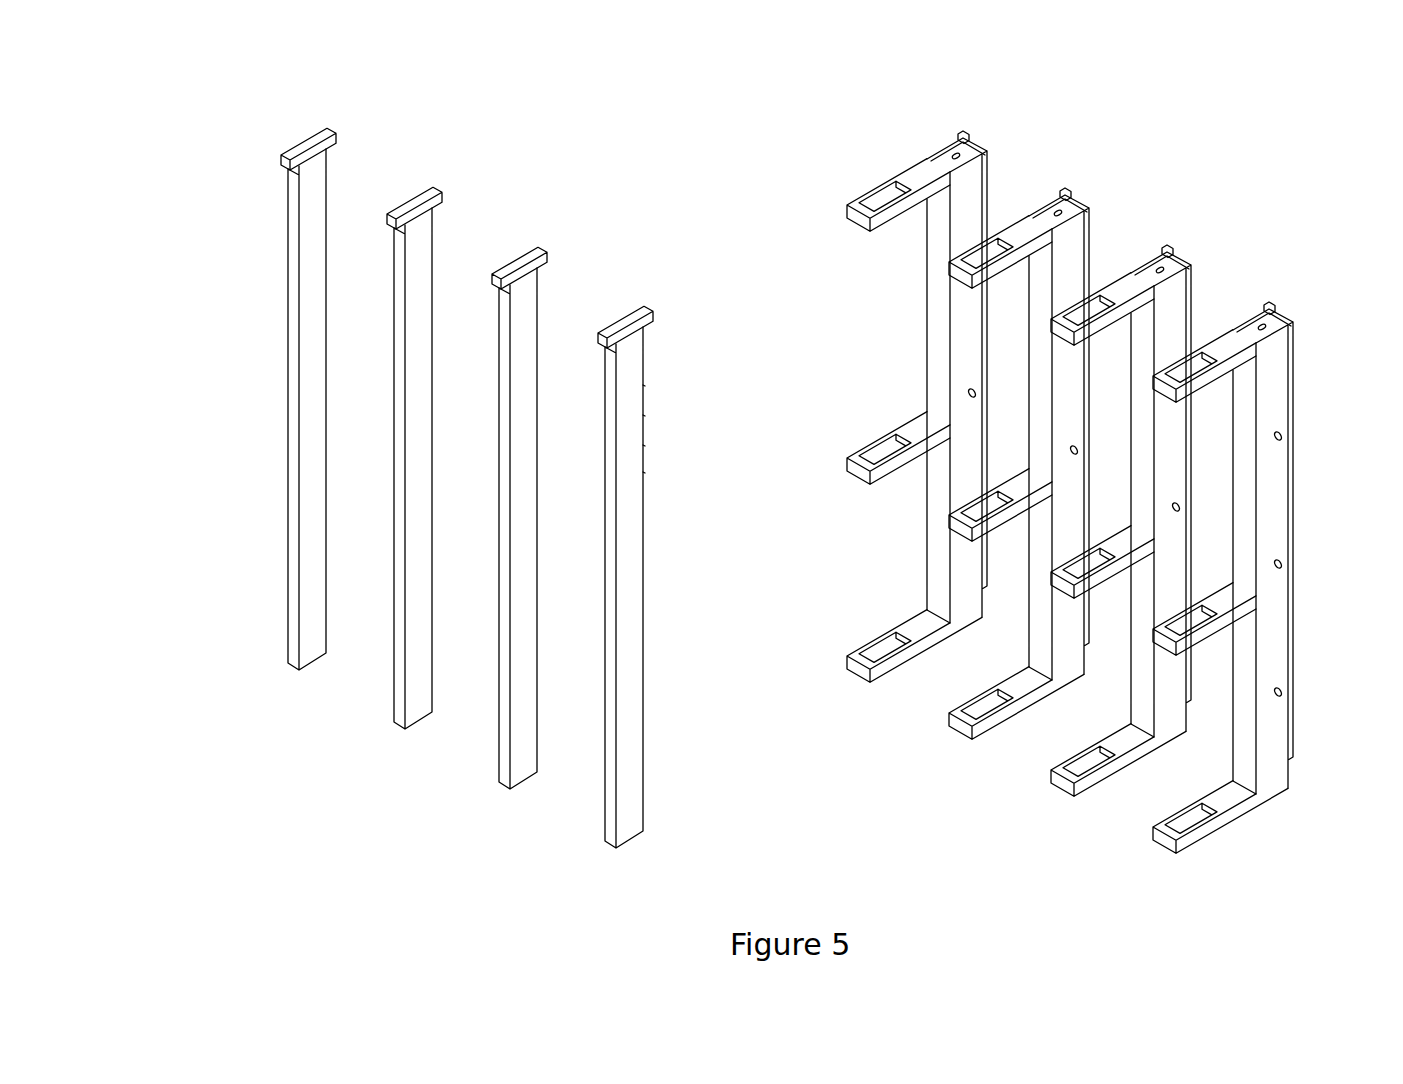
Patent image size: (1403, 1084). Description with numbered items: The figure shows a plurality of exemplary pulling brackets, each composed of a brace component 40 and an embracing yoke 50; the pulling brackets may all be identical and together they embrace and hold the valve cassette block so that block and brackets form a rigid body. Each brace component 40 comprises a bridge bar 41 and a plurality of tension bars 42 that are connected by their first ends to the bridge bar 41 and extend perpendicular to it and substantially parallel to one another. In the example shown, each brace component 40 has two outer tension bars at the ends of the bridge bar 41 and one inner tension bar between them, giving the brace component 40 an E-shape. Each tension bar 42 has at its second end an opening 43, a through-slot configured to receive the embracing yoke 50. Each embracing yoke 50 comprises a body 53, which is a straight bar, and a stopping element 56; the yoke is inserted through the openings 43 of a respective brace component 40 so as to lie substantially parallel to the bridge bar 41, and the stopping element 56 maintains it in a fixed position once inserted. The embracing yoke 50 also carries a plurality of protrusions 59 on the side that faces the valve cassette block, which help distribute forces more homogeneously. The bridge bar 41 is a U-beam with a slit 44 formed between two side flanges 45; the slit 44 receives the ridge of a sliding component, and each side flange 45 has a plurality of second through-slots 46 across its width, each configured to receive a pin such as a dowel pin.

The brace component 40 is at (1075, 446).
The bridge bar 41 is at (935, 262).
The tension bar 42 is at (915, 171).
The opening 43 is at (865, 197).
The slit 44 is at (958, 147).
The side flange 45 is at (970, 140).
The second through-slot 46 is at (1297, 432).
The embracing yoke 50 is at (467, 455).
The body 53 is at (300, 283).
The stopping element 56 is at (340, 132).
The protrusion 59 is at (645, 474).